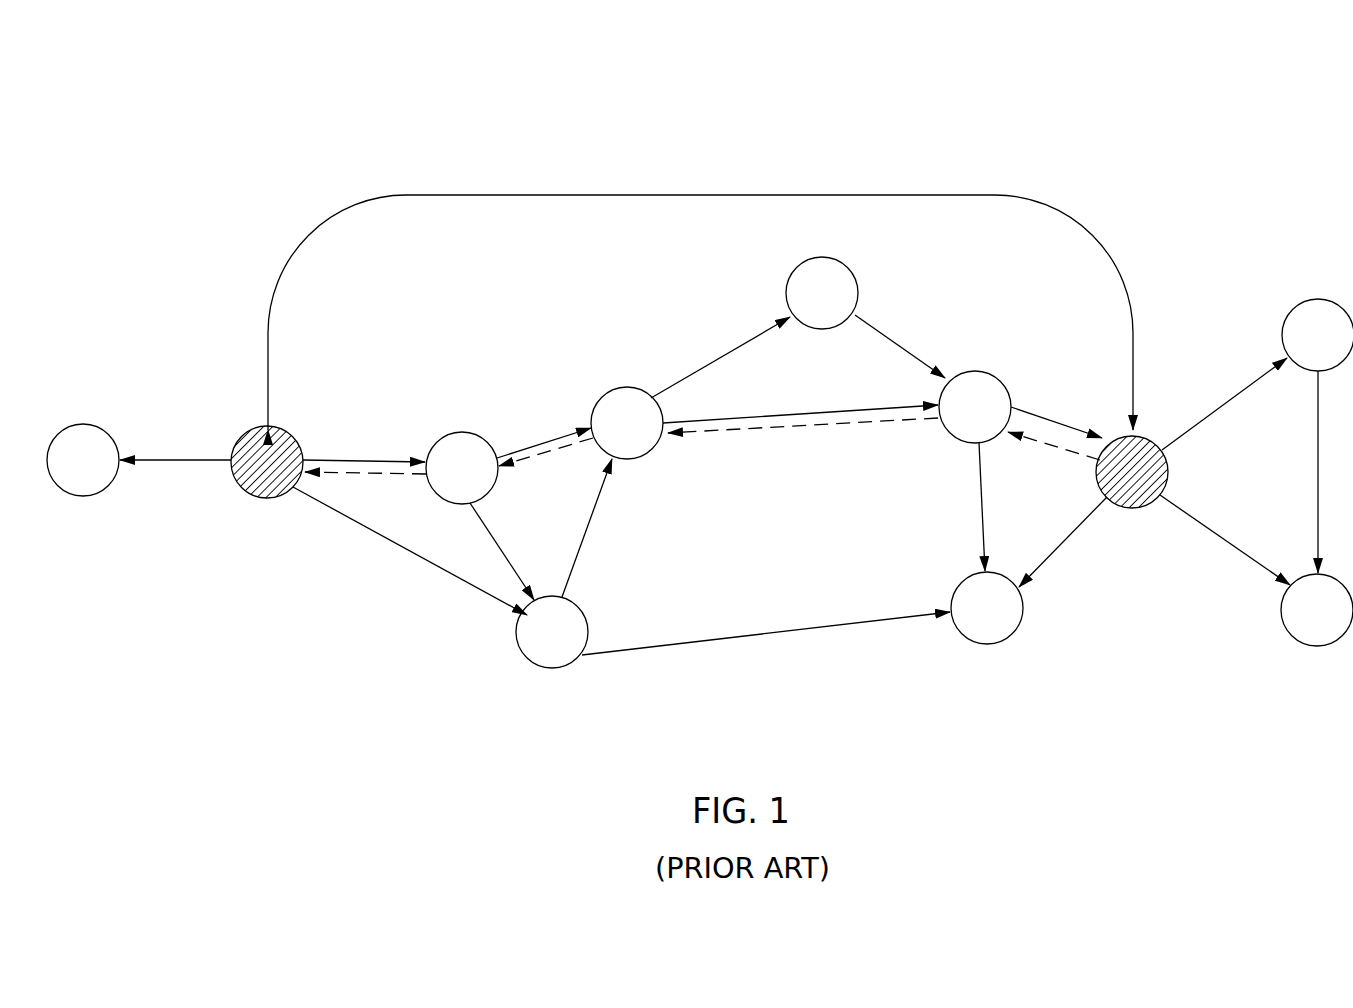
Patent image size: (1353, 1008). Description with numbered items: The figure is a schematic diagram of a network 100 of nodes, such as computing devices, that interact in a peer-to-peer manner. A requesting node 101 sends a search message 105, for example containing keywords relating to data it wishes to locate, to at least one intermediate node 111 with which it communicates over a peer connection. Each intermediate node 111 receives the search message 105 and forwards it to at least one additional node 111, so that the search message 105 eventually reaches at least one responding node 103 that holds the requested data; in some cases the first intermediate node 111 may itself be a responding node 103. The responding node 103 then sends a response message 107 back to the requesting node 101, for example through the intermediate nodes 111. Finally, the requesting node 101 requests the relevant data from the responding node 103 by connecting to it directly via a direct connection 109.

The network 100 is at (320, 106).
The requesting node 101 is at (248, 475).
The responding node 103 is at (1113, 485).
The search message 105 is at (176, 460).
The response message 107 is at (363, 476).
The direct connection 109 is at (738, 194).
The intermediate node 111 is at (64, 473).